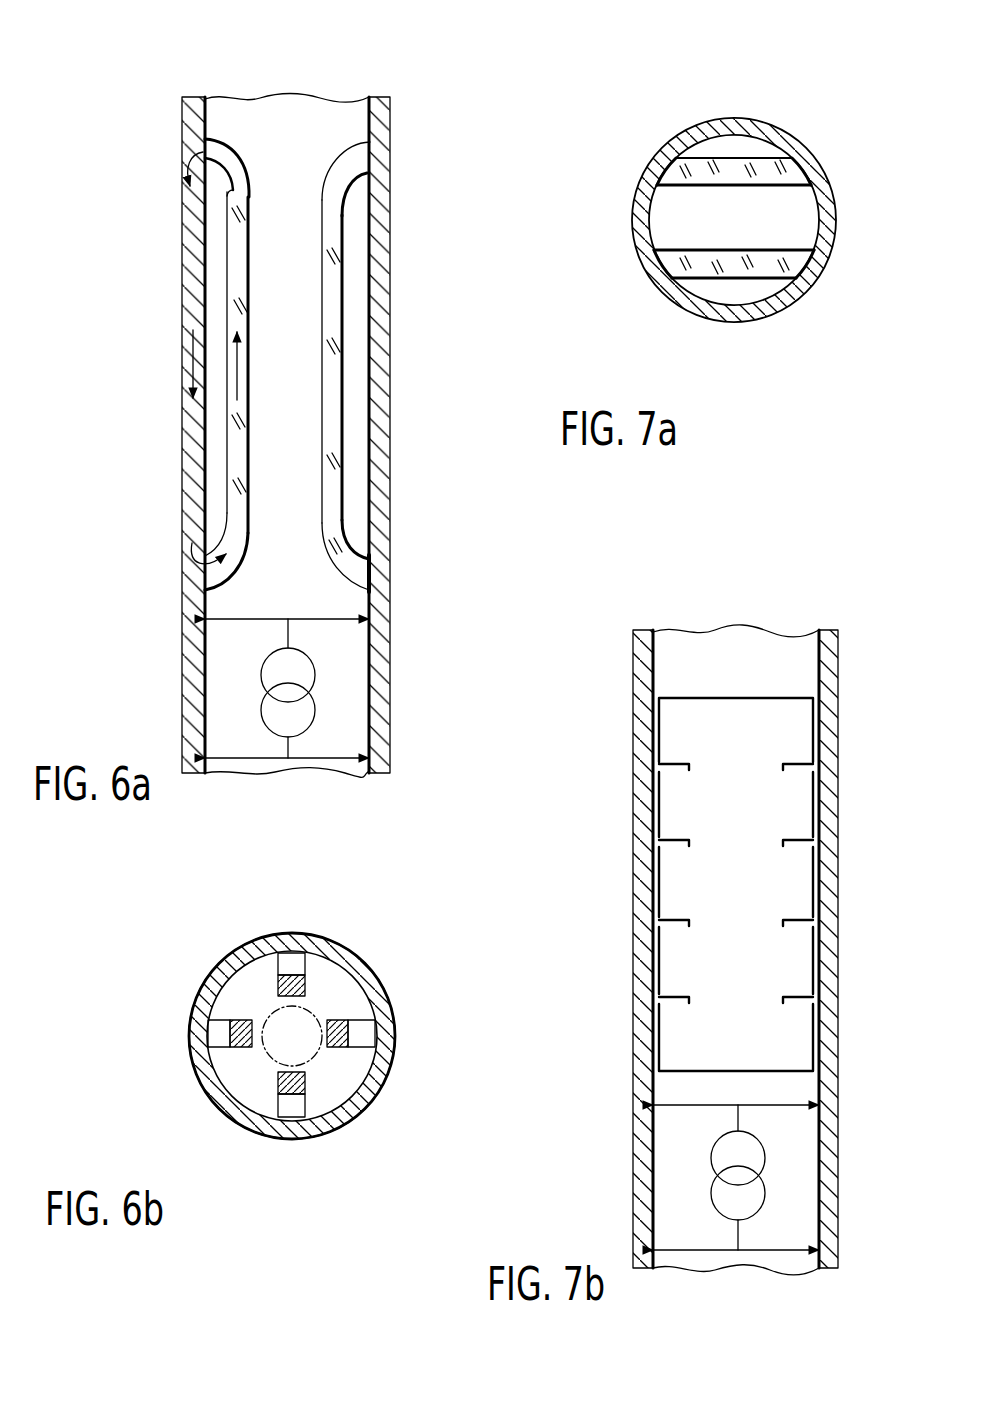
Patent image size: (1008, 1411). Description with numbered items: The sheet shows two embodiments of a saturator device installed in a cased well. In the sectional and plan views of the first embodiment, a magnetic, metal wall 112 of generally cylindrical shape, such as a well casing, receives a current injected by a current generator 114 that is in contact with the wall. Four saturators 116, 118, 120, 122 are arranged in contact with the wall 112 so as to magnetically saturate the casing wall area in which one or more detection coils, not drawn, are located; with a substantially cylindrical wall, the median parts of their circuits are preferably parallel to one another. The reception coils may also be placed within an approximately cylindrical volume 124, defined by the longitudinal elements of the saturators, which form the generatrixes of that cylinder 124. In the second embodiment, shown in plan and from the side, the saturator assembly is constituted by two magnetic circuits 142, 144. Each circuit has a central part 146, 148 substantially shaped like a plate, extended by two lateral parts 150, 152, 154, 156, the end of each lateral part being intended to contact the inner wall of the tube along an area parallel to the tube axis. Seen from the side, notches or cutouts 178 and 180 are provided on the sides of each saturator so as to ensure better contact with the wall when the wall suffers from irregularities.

In FIG. 6a, the magnetic metal wall 112 is at (383, 612).
In FIG. 6b, the magnetic metal wall 112 is at (232, 958).
In FIG. 6a, the current generator 114 is at (317, 691).
In FIG. 6a, the saturator 116 is at (222, 136).
In FIG. 6b, the saturator 116 is at (236, 1019).
In FIG. 6b, the saturator 118 is at (305, 988).
In FIG. 6a, the saturator 120 is at (349, 140).
In FIG. 6b, the saturator 120 is at (334, 1019).
In FIG. 6b, the saturator 122 is at (280, 1086).
In FIG. 6b, the volume 124 is at (308, 1058).
In FIG. 7a, the magnetic circuit 142 is at (734, 156).
In FIG. 7a, the magnetic circuit 144 is at (735, 281).
In FIG. 7b, the magnetic circuit 144 is at (733, 705).
In FIG. 7a, the central part 146 is at (728, 174).
In FIG. 7a, the central part 148 is at (741, 258).
In FIG. 7a, the lateral part 150 is at (665, 162).
In FIG. 7a, the lateral part 152 is at (801, 162).
In FIG. 7a, the lateral part 154 is at (665, 262).
In FIG. 7a, the lateral part 156 is at (801, 262).
In FIG. 7b, the notches or cutouts 178 is at (673, 842).
In FIG. 7b, the notches or cutouts 180 is at (793, 990).